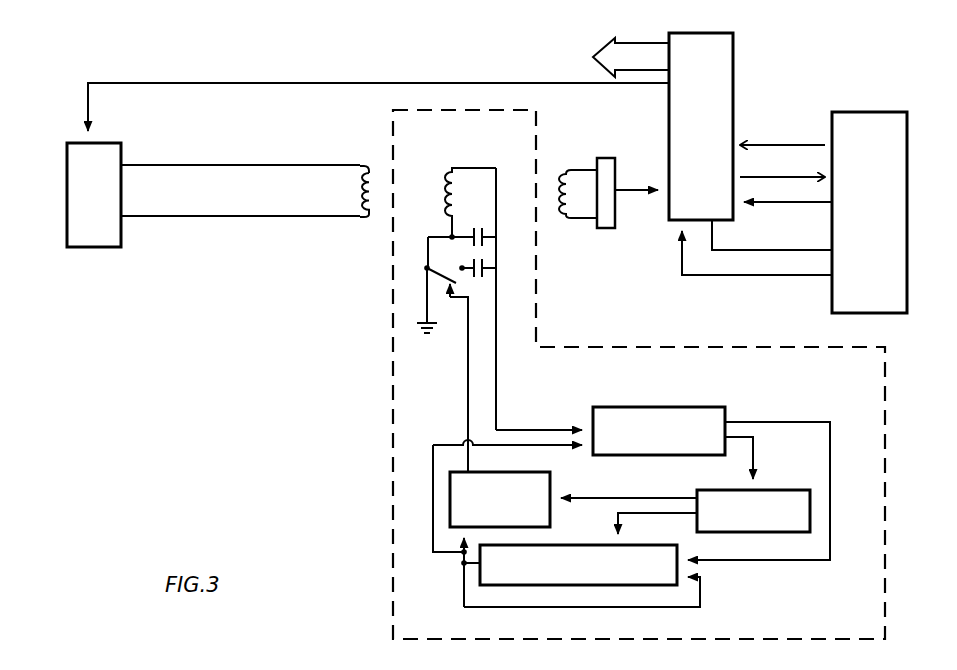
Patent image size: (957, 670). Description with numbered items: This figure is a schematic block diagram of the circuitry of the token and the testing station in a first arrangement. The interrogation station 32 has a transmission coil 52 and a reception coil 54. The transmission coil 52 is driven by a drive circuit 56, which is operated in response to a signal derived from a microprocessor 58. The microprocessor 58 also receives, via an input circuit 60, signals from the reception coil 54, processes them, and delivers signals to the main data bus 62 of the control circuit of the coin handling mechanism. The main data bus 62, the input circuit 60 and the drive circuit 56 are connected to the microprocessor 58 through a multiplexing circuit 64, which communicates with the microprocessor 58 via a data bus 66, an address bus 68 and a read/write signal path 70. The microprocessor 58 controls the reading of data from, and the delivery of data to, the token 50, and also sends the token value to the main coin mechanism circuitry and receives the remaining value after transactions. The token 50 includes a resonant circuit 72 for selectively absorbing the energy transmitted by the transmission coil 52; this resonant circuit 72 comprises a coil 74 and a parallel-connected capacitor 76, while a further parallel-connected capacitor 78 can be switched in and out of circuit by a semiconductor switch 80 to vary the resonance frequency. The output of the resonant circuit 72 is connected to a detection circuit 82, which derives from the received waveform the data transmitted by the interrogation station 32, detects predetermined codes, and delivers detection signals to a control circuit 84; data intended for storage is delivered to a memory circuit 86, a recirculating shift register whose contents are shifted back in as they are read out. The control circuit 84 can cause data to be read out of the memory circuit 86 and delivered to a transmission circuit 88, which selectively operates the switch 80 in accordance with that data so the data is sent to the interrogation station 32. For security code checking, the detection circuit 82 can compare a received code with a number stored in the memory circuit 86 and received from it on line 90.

The interrogation station 32 is at (645, 316).
The token 50 is at (885, 440).
The transmission coil 52 is at (363, 222).
The reception coil 54 is at (560, 170).
The drive circuit 56 is at (100, 247).
The microprocessor 58 is at (907, 160).
The input circuit 60 is at (601, 228).
The main data bus 62 is at (630, 52).
The multiplexing circuit 64 is at (733, 55).
The data bus 66 is at (772, 150).
The address bus 68 is at (757, 276).
The read/write signal path 70 is at (771, 206).
The resonant circuit 72 is at (434, 178).
The coil 74 is at (448, 168).
The capacitor 76 is at (487, 237).
The further capacitor 78 is at (487, 268).
The semiconductor switch 80 is at (447, 278).
The detection circuit 82 is at (668, 391).
The control circuit 84 is at (775, 497).
The memory circuit 86 is at (567, 556).
The transmission circuit 88 is at (556, 478).
The line 90 is at (433, 445).